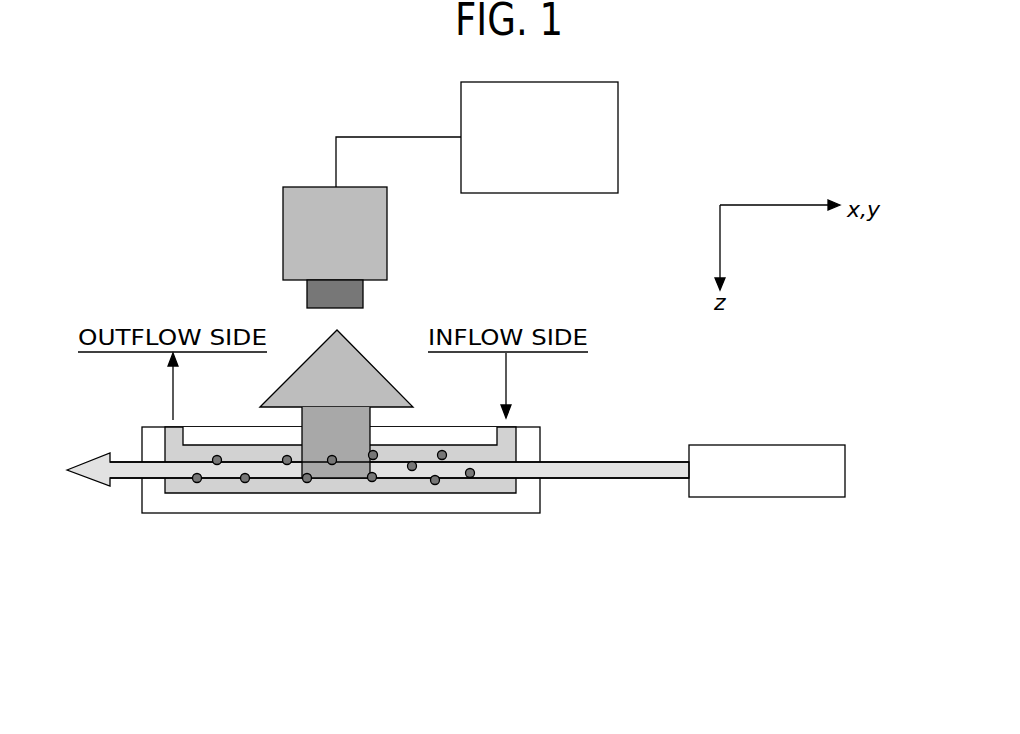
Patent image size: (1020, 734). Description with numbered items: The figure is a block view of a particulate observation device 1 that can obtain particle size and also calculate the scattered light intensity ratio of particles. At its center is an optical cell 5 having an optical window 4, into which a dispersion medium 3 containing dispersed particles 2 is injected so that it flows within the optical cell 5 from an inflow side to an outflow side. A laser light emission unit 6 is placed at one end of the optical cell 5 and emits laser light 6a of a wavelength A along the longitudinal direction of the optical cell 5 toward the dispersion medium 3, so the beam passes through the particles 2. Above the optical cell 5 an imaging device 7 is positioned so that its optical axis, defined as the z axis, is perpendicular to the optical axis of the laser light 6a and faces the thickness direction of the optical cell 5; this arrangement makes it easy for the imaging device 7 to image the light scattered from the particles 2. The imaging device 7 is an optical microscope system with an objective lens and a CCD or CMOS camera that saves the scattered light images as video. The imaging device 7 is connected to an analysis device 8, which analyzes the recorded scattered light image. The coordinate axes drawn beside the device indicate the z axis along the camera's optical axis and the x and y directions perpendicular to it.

The particulate observation device 1 is at (130, 202).
The particles 2 is at (470, 478).
The dispersion medium 3 is at (223, 481).
The optical window 4 is at (483, 435).
The optical cell 5 is at (188, 503).
The laser light emission unit 6 is at (773, 481).
The laser light 6a is at (658, 470).
The imaging device 7 is at (323, 232).
The analysis device 8 is at (546, 153).